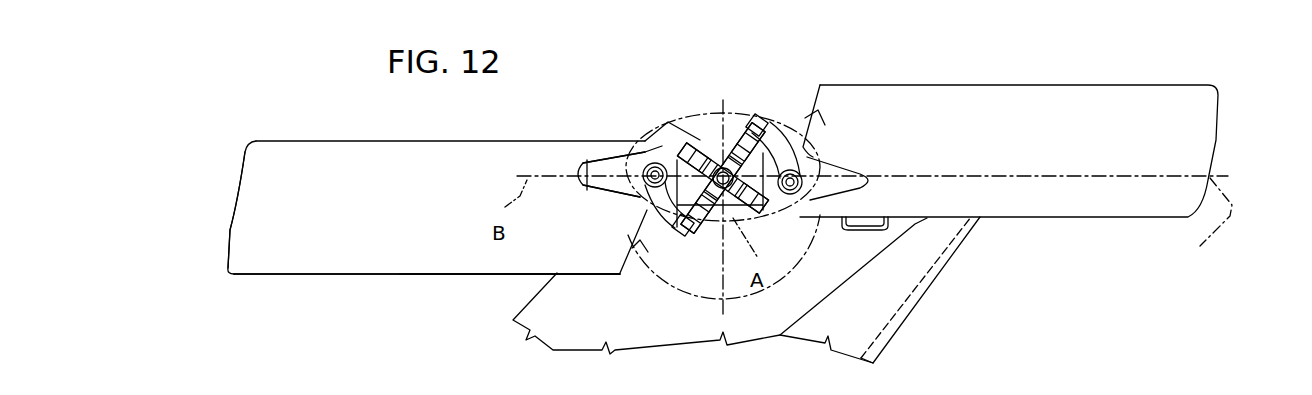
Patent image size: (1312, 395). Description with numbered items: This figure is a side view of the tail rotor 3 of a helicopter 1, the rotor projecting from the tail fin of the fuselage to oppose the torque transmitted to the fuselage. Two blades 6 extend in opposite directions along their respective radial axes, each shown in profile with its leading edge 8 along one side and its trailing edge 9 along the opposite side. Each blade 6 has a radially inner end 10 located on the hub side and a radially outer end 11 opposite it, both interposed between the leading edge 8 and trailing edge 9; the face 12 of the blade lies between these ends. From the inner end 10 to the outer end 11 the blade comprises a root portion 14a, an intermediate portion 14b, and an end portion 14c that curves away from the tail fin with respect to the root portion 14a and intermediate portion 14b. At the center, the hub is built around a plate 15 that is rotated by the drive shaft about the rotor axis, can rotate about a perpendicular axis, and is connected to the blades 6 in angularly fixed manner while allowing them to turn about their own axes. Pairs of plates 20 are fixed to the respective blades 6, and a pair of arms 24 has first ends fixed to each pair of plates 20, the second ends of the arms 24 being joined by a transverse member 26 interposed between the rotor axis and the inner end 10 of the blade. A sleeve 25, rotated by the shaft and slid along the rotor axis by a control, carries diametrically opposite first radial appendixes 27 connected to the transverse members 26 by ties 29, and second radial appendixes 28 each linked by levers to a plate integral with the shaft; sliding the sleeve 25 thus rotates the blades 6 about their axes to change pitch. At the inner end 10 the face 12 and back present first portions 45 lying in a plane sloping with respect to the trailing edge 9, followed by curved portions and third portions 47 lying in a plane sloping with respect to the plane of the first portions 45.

The helicopter 1 is at (903, 330).
The tail rotor 3 is at (376, 190).
The blade 6 is at (292, 262).
The leading edge 8 is at (493, 139).
The trailing edge 9 is at (1055, 82).
The radially inner end 10 is at (806, 120).
The radially outer end 11 is at (212, 245).
The face 12 is at (312, 172).
The root portion 14a is at (592, 152).
The intermediate portion 14b is at (375, 232).
The end portion 14c is at (245, 172).
The plate 15 is at (778, 212).
The plates 20 is at (606, 165).
The arms 24 is at (780, 150).
The sleeve 25 is at (700, 155).
The transverse member 26 is at (692, 220).
The first radial appendixes 27 is at (738, 140).
The second radial appendixes 28 is at (686, 168).
The ties 29 is at (756, 140).
The first portions 45 is at (642, 172).
The third portions 47 is at (813, 105).